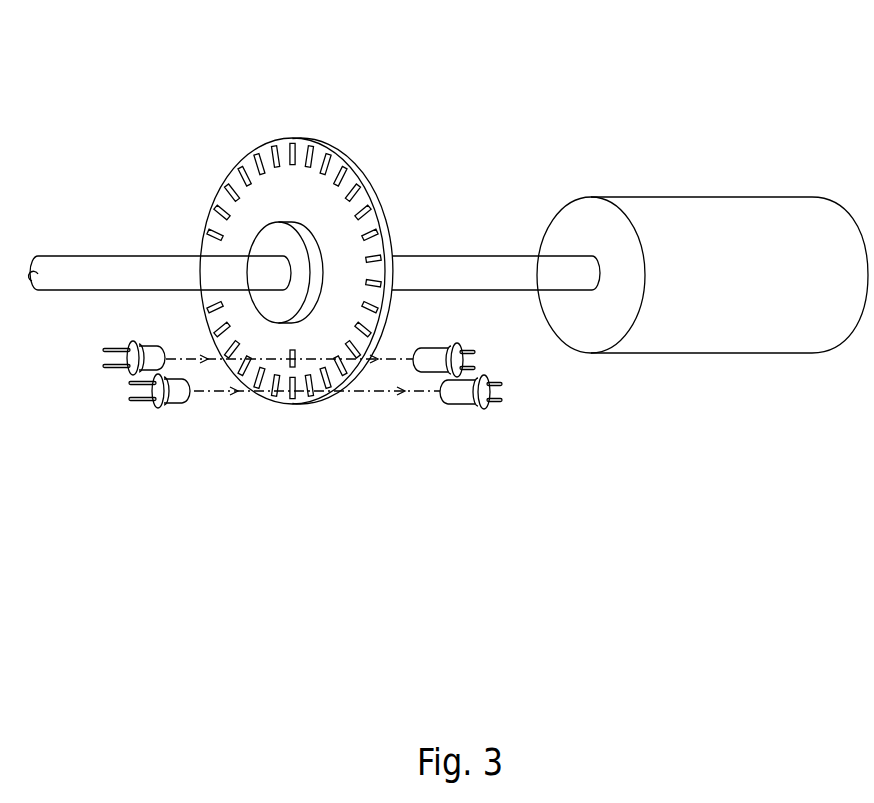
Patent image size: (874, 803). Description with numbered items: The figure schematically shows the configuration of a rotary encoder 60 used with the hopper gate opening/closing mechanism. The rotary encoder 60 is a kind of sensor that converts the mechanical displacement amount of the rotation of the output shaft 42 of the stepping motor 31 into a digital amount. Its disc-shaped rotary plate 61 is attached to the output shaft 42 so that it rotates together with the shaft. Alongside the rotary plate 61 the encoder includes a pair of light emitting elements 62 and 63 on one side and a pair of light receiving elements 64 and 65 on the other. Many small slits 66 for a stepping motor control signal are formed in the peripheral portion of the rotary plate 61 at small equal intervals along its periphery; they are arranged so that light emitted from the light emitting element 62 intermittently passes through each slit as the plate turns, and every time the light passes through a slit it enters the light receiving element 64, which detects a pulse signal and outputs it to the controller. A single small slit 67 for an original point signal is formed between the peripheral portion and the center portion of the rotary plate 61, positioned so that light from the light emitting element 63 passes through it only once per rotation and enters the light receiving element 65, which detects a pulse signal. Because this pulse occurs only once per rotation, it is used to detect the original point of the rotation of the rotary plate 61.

The stepping motor 31 is at (700, 197).
The output shaft 42 is at (488, 256).
The rotary encoder 60 is at (432, 150).
The rotary plate 61 is at (327, 405).
The light emitting element 62 is at (167, 404).
The light emitting element 63 is at (122, 402).
The light receiving element 64 is at (457, 404).
The light receiving element 65 is at (427, 343).
The slits 66 is at (318, 157).
The slit 67 is at (295, 369).